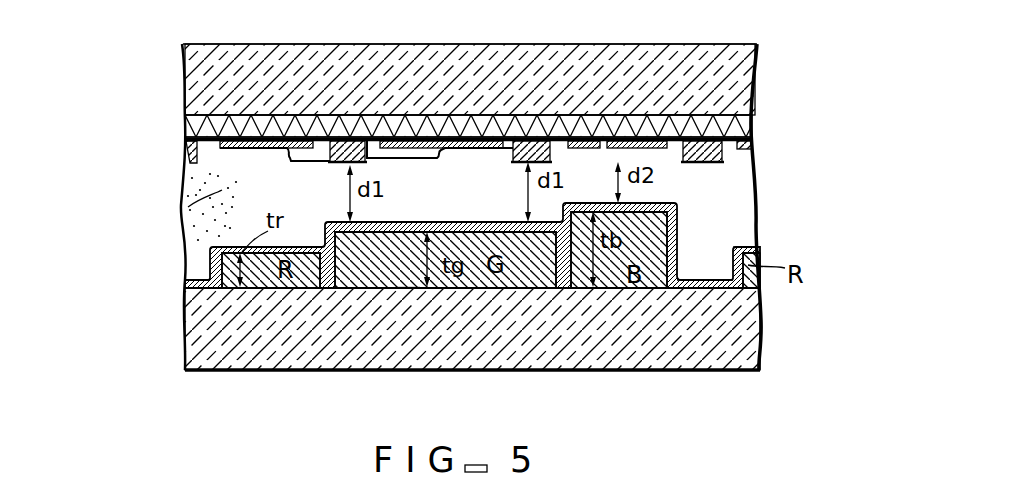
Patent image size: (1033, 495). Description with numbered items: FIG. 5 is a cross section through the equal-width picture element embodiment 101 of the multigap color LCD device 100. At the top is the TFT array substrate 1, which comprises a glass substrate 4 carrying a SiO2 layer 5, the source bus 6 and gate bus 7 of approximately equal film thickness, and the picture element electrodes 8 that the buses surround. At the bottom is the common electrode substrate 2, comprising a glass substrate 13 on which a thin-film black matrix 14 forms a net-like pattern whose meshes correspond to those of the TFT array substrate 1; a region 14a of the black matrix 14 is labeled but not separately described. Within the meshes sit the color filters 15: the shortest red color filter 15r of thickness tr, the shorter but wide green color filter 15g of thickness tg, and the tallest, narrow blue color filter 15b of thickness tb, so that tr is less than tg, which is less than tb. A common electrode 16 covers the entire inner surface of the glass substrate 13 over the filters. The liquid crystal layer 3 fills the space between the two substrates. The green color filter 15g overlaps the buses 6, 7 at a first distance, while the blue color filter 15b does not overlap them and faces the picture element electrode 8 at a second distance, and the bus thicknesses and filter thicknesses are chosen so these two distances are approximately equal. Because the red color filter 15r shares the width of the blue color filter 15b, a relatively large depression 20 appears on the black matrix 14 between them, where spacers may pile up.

The TFT array substrate 1 is at (173, 45).
The common electrode substrate 2 is at (178, 247).
The liquid crystal layer 3 is at (183, 203).
The glass substrate 4 is at (208, 60).
The SiO2 layer 5 is at (473, 133).
The source bus 6 is at (348, 178).
The gate bus 7 is at (394, 170).
The picture element electrode 8 is at (594, 152).
The glass substrate 13 is at (692, 345).
The black matrix 14 is at (343, 290).
The insulating layer portion 14a is at (408, 290).
The color filters 15 is at (750, 284).
The red color filter 15r is at (262, 290).
The green color filter 15g is at (467, 287).
The blue color filter 15b is at (605, 290).
The common electrode 16 is at (750, 226).
The depression 20 is at (703, 277).
The multigap color LCD device 100 is at (150, 391).
The equal-width picture element embodiment 101 is at (172, 402).